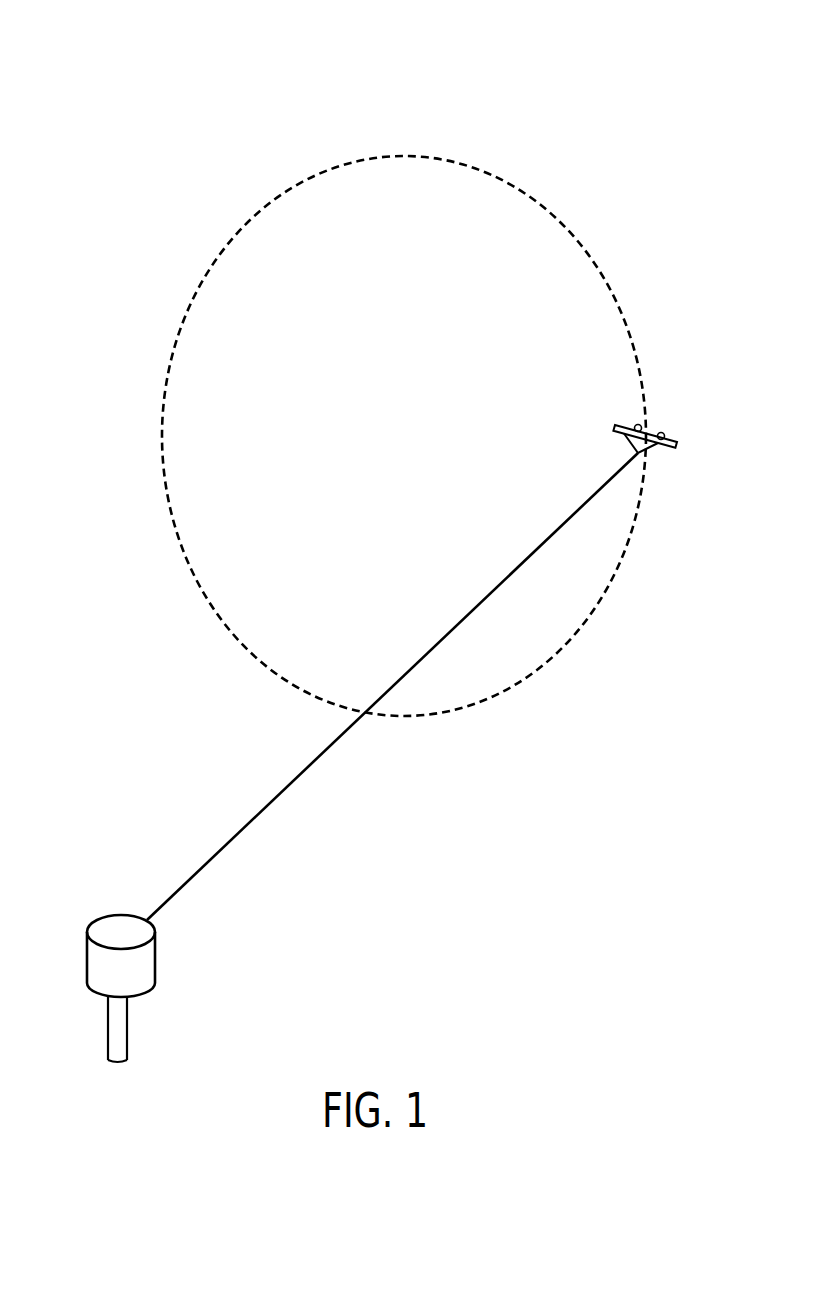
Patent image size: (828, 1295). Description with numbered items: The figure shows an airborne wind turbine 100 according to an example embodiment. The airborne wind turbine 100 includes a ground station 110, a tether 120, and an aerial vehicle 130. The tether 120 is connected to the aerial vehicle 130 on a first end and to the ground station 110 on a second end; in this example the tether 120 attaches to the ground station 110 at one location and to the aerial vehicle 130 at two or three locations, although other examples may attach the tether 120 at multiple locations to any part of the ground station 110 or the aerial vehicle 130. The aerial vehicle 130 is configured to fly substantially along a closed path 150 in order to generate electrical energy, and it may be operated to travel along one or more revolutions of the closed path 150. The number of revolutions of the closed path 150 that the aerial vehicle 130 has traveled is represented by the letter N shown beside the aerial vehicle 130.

The airborne wind turbine 100 is at (176, 98).
The ground station 110 is at (82, 896).
The tether 120 is at (315, 765).
The aerial vehicle 130 is at (668, 492).
The closed path 150 is at (179, 322).